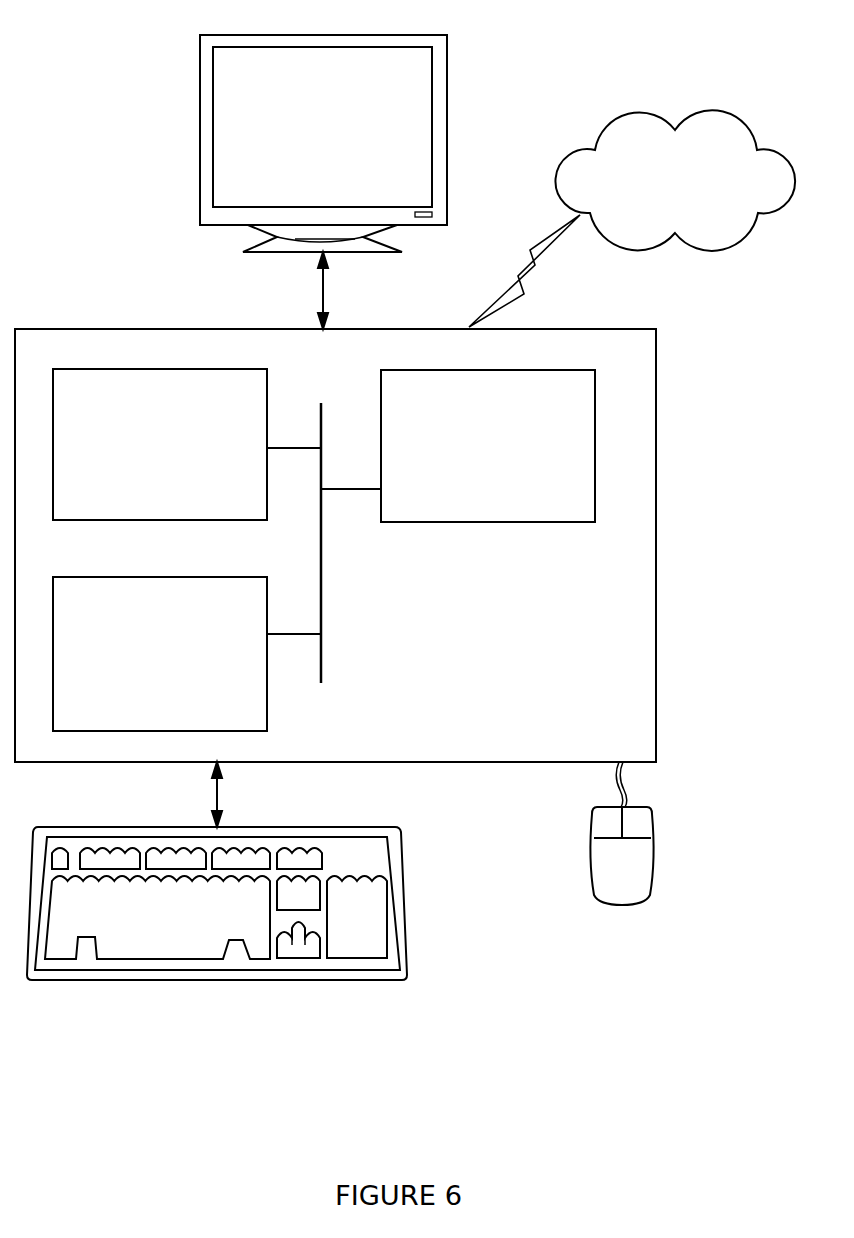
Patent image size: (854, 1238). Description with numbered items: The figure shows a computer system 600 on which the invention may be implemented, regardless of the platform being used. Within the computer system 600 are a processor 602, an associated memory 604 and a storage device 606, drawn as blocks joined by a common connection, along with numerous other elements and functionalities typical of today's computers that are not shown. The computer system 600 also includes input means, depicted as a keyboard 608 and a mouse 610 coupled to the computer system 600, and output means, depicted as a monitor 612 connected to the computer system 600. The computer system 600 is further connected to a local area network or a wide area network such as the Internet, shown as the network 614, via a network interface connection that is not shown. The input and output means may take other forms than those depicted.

The computer system 600 is at (417, 531).
The processor 602 is at (468, 452).
The memory 604 is at (140, 457).
The storage device 606 is at (137, 664).
The keyboard 608 is at (140, 927).
The mouse 610 is at (602, 877).
The monitor 612 is at (303, 141).
The network 614 is at (655, 199).